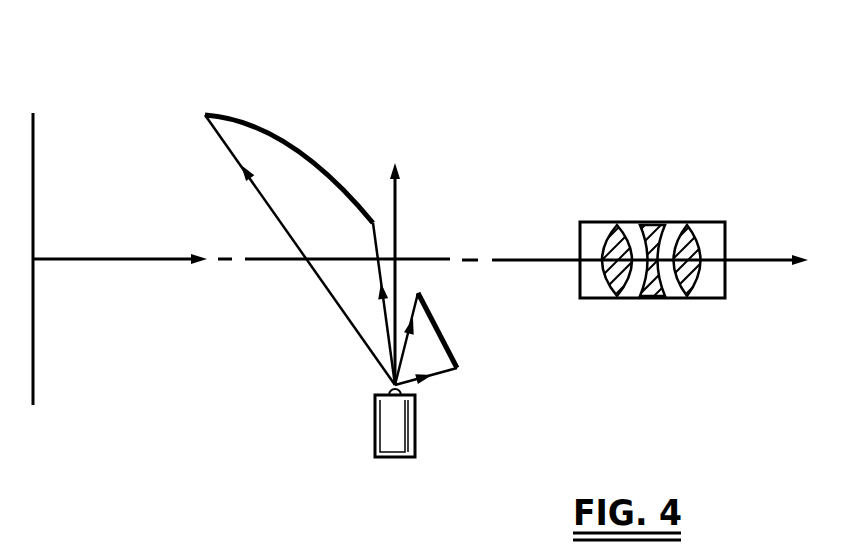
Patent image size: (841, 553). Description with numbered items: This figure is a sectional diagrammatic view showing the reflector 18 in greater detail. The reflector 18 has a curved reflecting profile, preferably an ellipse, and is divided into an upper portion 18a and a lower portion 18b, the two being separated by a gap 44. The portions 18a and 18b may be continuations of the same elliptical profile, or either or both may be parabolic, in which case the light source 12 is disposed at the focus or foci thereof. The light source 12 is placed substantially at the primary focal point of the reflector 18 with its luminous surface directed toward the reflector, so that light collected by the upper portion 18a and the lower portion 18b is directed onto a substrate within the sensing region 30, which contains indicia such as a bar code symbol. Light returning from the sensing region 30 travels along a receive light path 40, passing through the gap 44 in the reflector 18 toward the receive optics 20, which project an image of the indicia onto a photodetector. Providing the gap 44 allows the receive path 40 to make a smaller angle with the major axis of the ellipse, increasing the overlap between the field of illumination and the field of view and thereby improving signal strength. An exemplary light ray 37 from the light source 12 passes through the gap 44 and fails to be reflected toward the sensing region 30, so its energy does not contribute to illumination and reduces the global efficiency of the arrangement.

The light source 12 is at (378, 433).
The reflector 18 is at (374, 202).
The upper portion 18a is at (278, 138).
The lower portion 18b is at (443, 340).
The receive optics 20 is at (635, 222).
The sensing region 30 is at (46, 240).
The light ray 37 is at (397, 208).
The receive light path 40 is at (125, 258).
The gap 44 is at (405, 253).